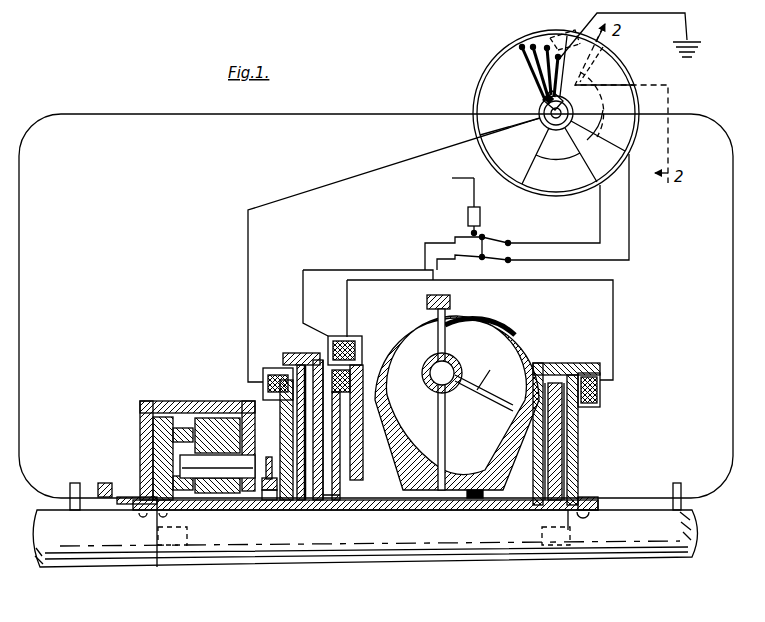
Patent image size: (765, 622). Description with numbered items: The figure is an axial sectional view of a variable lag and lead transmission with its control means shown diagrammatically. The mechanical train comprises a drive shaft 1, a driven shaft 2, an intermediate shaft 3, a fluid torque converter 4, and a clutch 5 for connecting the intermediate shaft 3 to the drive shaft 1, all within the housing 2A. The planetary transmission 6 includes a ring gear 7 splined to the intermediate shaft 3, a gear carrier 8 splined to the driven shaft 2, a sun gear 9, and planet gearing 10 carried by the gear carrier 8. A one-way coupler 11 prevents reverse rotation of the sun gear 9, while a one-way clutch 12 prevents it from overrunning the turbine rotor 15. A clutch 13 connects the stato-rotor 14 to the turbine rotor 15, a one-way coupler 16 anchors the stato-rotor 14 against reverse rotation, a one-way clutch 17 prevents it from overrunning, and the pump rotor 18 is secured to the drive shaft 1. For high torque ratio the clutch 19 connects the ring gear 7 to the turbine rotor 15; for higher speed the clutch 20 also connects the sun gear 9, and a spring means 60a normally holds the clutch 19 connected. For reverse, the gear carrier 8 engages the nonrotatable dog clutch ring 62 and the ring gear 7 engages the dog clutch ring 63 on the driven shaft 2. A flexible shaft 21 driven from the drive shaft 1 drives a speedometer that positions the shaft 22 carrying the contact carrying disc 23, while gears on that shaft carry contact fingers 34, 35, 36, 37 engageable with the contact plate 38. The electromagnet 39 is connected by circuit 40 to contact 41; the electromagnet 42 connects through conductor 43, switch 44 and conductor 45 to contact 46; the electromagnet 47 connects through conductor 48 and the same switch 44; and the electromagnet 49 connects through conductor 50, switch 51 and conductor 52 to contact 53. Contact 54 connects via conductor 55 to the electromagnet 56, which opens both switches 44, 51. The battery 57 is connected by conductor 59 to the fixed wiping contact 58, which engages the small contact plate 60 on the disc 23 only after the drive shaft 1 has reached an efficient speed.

The drive shaft 1 is at (668, 557).
The driven shaft 2 is at (117, 553).
The housing 2A is at (20, 303).
The intermediate shaft 3 is at (360, 555).
The fluid torque converter 4 is at (545, 332).
The clutch 5 is at (560, 431).
The planetary transmission 6 is at (190, 428).
The ring gear 7 is at (205, 417).
The gear carrier 8 is at (150, 432).
The sun gear 9 is at (218, 510).
The planet gearing 10 is at (245, 441).
The one-way coupler 11 is at (270, 504).
The one-way clutch 12 is at (295, 504).
The clutch 13 is at (364, 340).
The stato-rotor 14 is at (460, 427).
The turbine rotor 15 is at (478, 390).
The one-way coupler 16 is at (400, 510).
The one-way clutch 17 is at (478, 505).
The pump rotor 18 is at (437, 349).
The clutch 19 is at (388, 386).
The clutch 20 is at (292, 353).
The flexible shaft 21 is at (733, 350).
The shaft 22 is at (554, 121).
The contact carrying disc 23 is at (505, 62).
The contact finger 34 is at (559, 56).
The contact finger 35 is at (546, 47).
The contact finger 36 is at (533, 46).
The contact finger 37 is at (520, 46).
The contact plate 38 is at (612, 77).
The electromagnet 39 is at (272, 374).
The circuit 40 is at (308, 192).
The contact 41 is at (537, 121).
The electromagnet 42 is at (430, 366).
The conductor 43 is at (363, 268).
The switch 44 is at (466, 236).
The conductor 45 is at (600, 216).
The contact 46 is at (571, 130).
The electromagnet 47 is at (598, 386).
The conductor 48 is at (613, 304).
The electromagnet 49 is at (340, 336).
The conductor 50 is at (405, 281).
The switch 51 is at (470, 262).
The conductor 52 is at (629, 248).
The contact 53 is at (596, 122).
The contact 54 is at (545, 124).
The conductor 55 is at (451, 172).
The electromagnet 56 is at (481, 214).
The battery 57 is at (702, 52).
The fixed wiping contact 58 is at (600, 100).
The conductor 59 is at (695, 13).
The small contact plate 60 is at (613, 47).
The spring means 60a is at (340, 500).
The dog clutch ring 62 is at (102, 482).
The dog clutch ring 63 is at (150, 505).